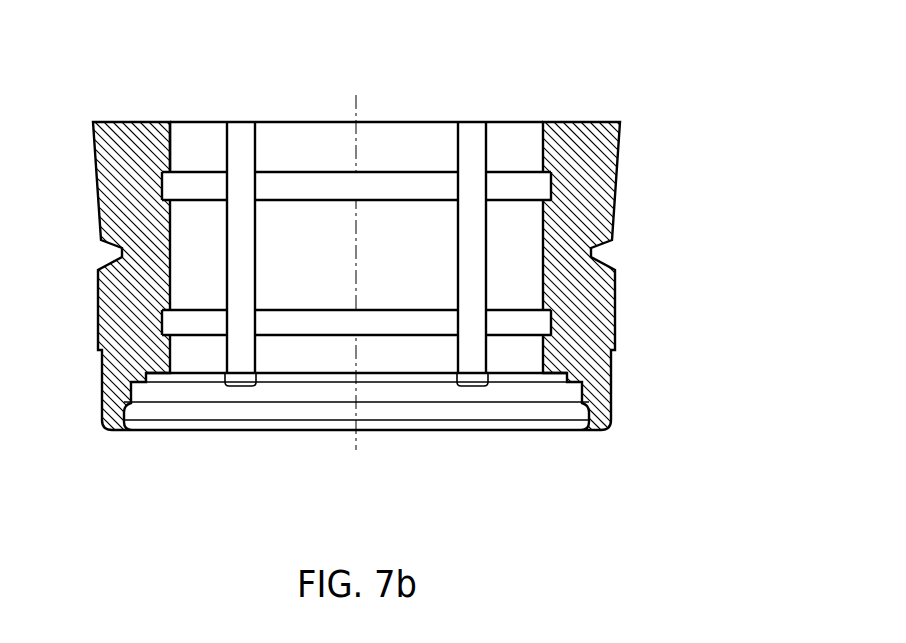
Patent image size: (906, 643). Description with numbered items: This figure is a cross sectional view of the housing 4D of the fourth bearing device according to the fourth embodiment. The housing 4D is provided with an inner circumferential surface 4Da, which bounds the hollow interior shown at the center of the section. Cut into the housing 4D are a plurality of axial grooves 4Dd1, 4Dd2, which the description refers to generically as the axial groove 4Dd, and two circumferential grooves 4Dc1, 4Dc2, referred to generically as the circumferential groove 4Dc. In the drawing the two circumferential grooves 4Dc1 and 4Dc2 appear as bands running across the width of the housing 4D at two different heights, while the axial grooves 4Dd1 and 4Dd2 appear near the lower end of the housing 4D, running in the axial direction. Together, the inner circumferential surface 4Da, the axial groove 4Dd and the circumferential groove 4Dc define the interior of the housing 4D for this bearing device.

The housing 4D is at (577, 130).
The inner circumferential surface 4Da is at (172, 158).
The circumferential groove 4Dc is at (459, 257).
The circumferential groove 4Dc1 is at (554, 175).
The circumferential groove 4Dc2 is at (554, 311).
The axial groove 4Dd is at (341, 427).
The axial groove 4Dd1 is at (240, 386).
The axial groove 4Dd2 is at (473, 386).